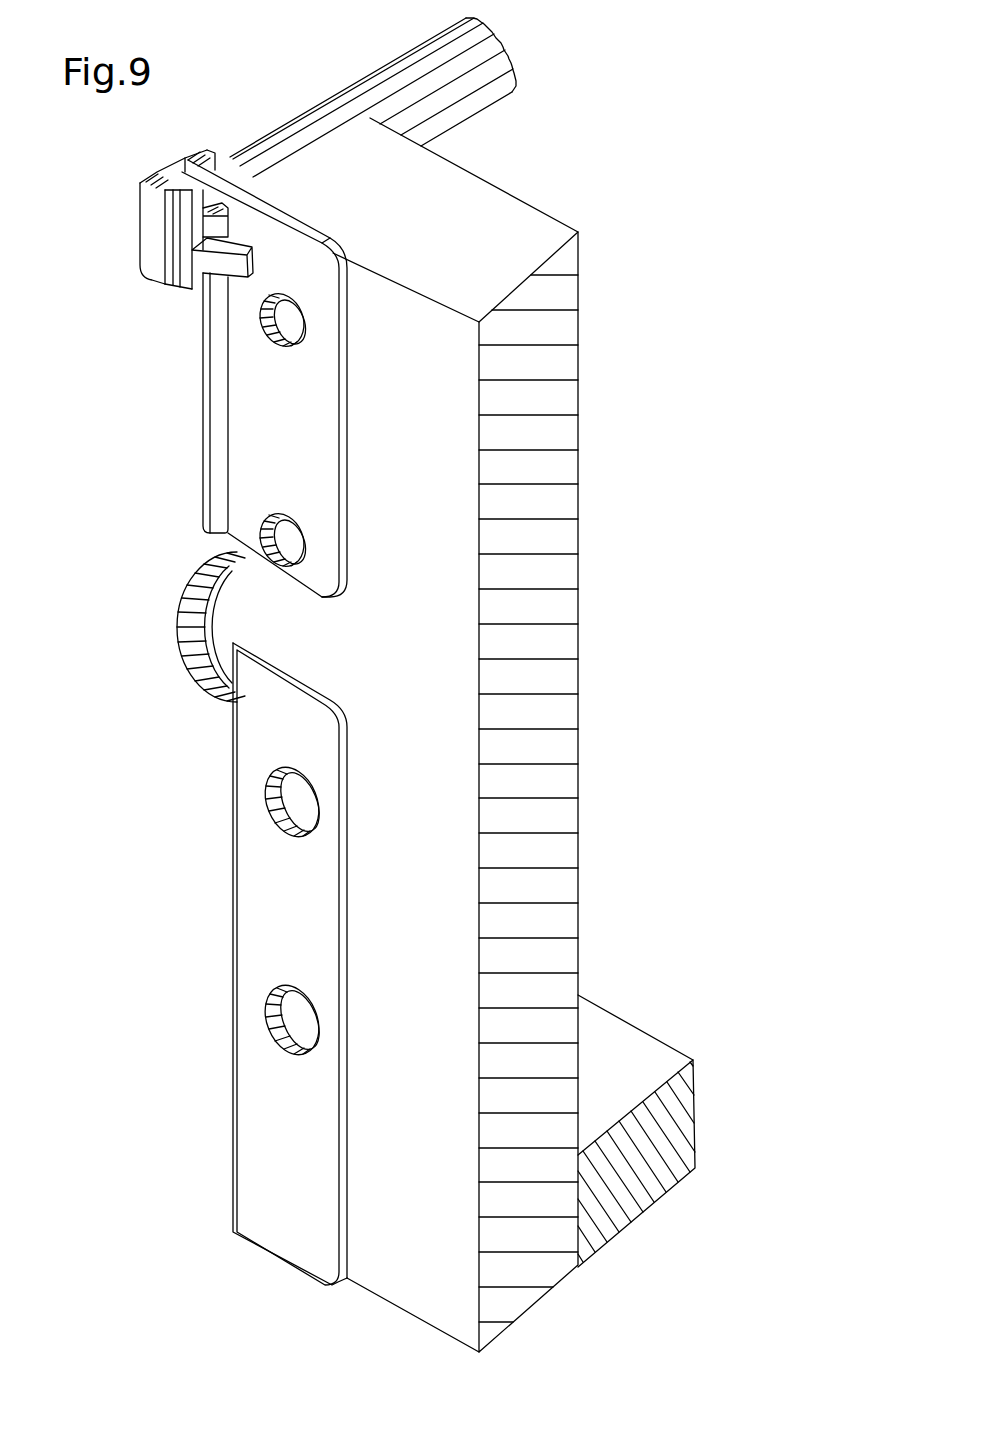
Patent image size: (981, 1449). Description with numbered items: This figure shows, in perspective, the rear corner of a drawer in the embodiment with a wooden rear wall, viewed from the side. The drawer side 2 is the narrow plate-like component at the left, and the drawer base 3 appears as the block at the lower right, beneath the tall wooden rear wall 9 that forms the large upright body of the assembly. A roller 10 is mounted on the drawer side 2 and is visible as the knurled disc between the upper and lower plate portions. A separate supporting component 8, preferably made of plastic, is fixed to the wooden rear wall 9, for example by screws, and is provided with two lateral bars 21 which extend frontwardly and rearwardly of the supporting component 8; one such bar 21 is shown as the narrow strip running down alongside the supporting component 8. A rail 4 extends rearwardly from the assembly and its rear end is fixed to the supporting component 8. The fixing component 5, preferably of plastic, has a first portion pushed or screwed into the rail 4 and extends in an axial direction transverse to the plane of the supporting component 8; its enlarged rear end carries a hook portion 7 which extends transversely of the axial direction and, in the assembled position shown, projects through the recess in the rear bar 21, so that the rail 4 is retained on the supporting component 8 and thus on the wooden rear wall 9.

The drawer side 2 is at (232, 960).
The drawer base 3 is at (696, 1062).
The rail 4 is at (516, 90).
The fixing component 5 is at (150, 258).
The hook portion 7 is at (221, 271).
The supporting component 8 is at (260, 465).
The wooden rear wall 9 is at (580, 307).
The roller 10 is at (188, 662).
The lateral bar 21 is at (207, 383).